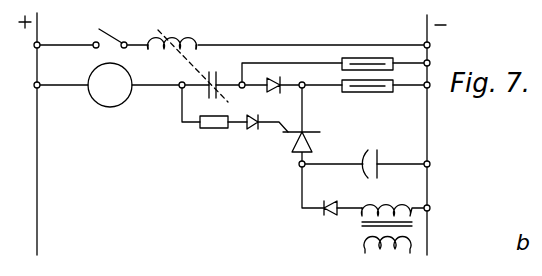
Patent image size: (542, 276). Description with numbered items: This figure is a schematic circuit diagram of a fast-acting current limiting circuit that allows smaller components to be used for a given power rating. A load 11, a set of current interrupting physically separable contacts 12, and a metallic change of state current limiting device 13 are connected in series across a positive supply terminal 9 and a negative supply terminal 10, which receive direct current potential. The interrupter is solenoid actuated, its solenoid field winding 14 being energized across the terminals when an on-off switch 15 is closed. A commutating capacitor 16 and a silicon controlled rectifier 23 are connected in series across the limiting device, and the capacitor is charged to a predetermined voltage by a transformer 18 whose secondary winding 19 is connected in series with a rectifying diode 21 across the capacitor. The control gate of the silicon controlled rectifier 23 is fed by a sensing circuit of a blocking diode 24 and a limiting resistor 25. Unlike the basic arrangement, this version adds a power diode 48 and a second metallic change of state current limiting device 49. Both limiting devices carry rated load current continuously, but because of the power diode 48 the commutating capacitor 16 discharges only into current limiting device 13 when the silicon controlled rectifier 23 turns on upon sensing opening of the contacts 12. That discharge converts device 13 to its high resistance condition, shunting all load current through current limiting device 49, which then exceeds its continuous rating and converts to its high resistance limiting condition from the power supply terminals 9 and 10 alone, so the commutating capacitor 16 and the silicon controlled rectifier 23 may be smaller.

The positive supply terminal 9 is at (40, 34).
The negative supply terminal 10 is at (425, 36).
The load 11 is at (94, 101).
The current interrupting physically separable contacts 12 is at (207, 93).
The current limiting means 13 is at (379, 92).
The solenoid field winding 14 is at (188, 45).
The on-off switch 15 is at (108, 39).
The commutating capacitor 16 is at (381, 160).
The transformer 18 is at (362, 236).
The secondary winding 19 is at (387, 206).
The rectifying diode 21 is at (331, 206).
The silicon controlled rectifier 23 is at (315, 131).
The blocking diode 24 is at (250, 130).
The limiting resistor 25 is at (210, 129).
The power diode 48 is at (279, 94).
The metallic change of state current limiting device 49 is at (356, 58).